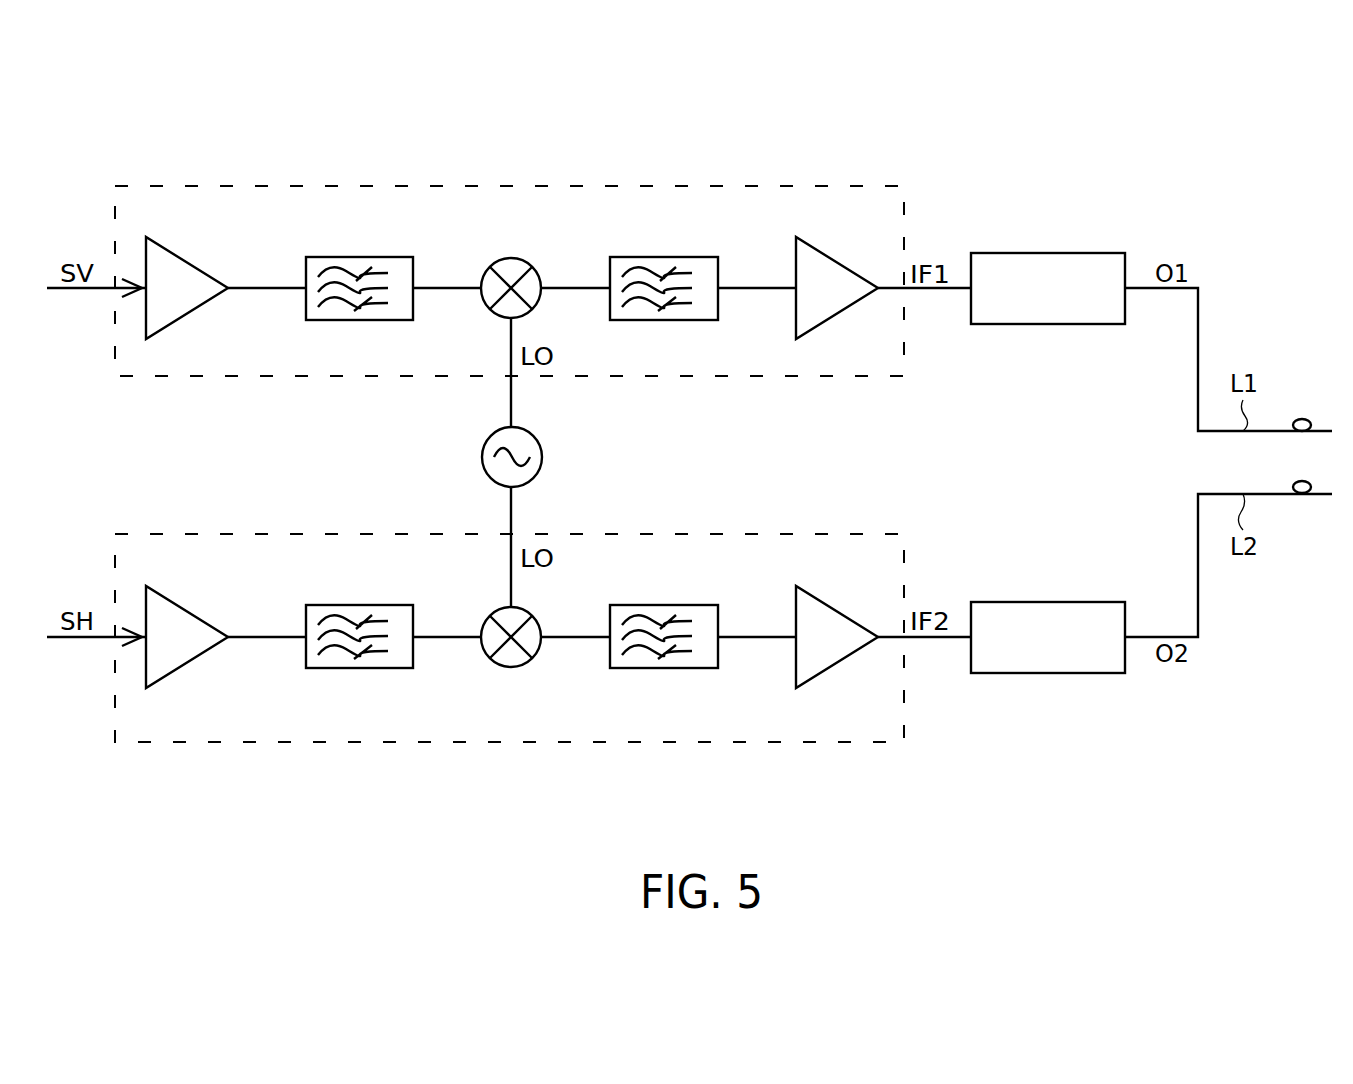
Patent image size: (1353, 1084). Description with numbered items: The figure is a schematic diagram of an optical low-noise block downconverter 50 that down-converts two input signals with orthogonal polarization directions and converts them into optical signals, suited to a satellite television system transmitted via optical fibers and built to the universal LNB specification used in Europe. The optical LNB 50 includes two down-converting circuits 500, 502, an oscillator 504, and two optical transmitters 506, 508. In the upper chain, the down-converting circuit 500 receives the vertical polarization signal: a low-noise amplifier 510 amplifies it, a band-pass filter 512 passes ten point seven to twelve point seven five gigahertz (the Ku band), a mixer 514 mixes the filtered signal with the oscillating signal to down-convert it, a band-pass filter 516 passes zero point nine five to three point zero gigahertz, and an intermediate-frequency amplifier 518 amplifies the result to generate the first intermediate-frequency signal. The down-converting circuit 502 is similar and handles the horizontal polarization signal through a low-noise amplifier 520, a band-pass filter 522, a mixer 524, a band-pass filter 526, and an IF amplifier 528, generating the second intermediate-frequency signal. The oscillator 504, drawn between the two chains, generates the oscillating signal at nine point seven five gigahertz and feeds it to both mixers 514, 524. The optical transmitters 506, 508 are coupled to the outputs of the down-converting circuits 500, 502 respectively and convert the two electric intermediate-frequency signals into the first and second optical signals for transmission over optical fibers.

The optical low-noise block downconverter 50 is at (1216, 158).
The down-converting circuit 500 is at (455, 186).
The down-converting circuit 502 is at (455, 742).
The oscillator 504 is at (482, 457).
The optical transmitter 506 is at (1051, 253).
The optical transmitter 508 is at (1051, 602).
The low-noise amplifier 510 is at (187, 258).
The band-pass filter 512 is at (360, 257).
The mixer 514 is at (512, 256).
The band-pass filter 516 is at (664, 257).
The intermediate-frequency amplifier 518 is at (836, 258).
The low-noise amplifier 520 is at (187, 607).
The band-pass filter 522 is at (360, 605).
The mixer 524 is at (512, 668).
The band-pass filter 526 is at (664, 605).
The IF amplifier 528 is at (836, 609).